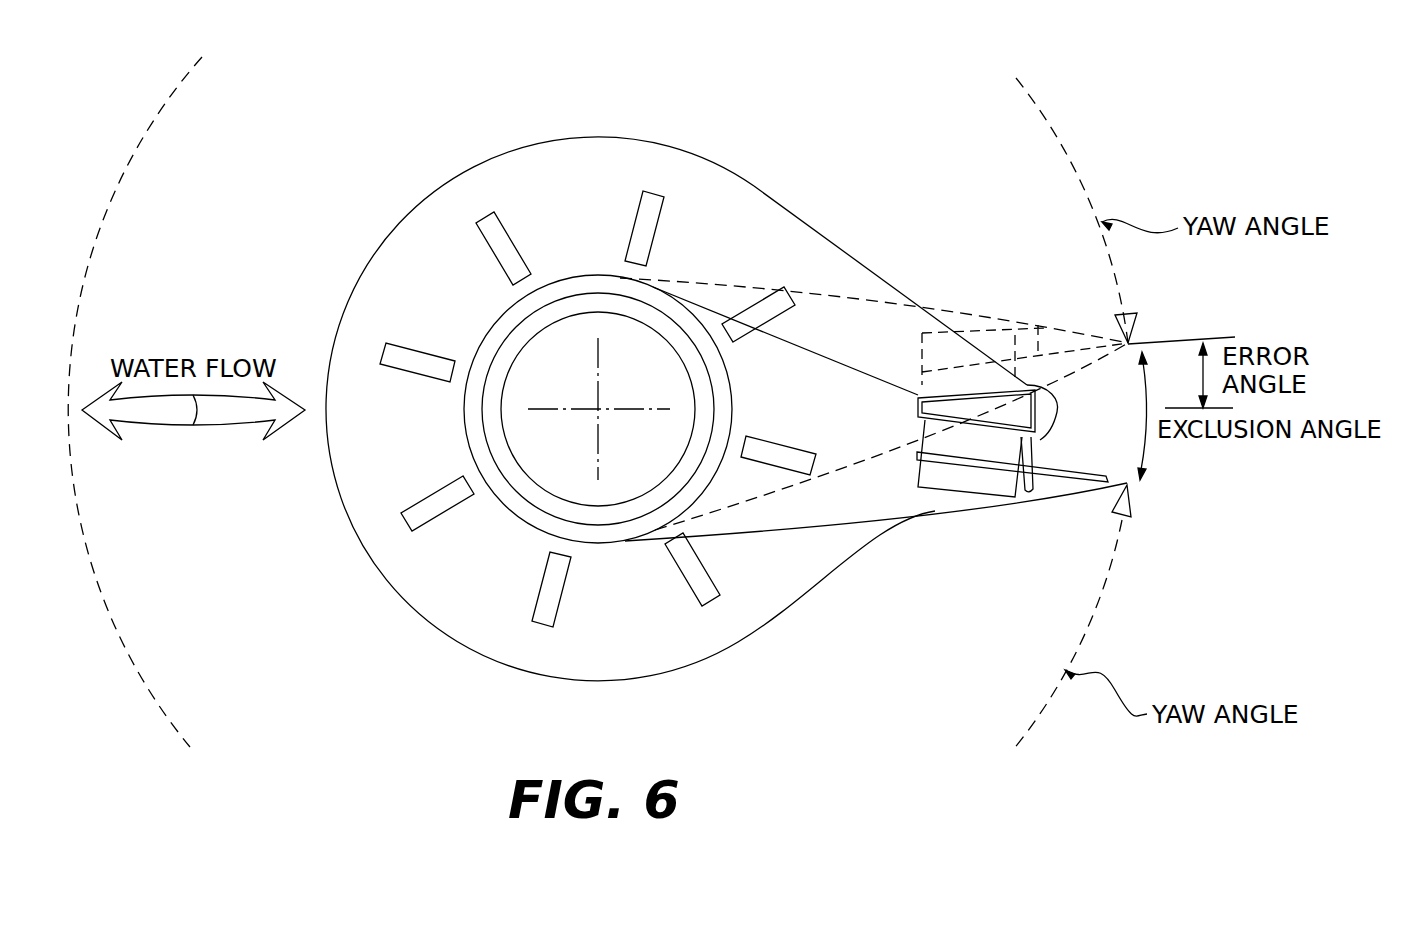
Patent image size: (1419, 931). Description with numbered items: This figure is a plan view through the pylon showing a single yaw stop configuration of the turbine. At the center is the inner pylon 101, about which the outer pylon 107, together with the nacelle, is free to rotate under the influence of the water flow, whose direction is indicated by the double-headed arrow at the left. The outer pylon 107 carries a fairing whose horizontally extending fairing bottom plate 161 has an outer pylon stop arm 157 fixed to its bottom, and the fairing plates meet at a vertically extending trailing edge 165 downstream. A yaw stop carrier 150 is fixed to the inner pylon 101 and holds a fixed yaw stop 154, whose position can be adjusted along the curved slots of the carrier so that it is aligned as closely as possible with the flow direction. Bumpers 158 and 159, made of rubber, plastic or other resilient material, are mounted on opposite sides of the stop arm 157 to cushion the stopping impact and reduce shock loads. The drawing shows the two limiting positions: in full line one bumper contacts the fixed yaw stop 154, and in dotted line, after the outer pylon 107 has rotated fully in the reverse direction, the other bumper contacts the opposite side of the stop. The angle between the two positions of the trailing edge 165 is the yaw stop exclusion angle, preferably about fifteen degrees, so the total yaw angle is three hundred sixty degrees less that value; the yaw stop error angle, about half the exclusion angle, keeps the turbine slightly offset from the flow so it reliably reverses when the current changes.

The inner pylon 101 is at (507, 344).
The outer pylon 107 is at (456, 444).
The fairing bottom plate 161 is at (396, 325).
The yaw stop carrier 150 is at (1074, 417).
The fixed yaw stop 154 is at (993, 377).
The outer pylon stop arm 157 is at (1040, 322).
The bumper 158 is at (915, 396).
The bumper 159 is at (922, 352).
The vertically extending edge 165 is at (1133, 338).